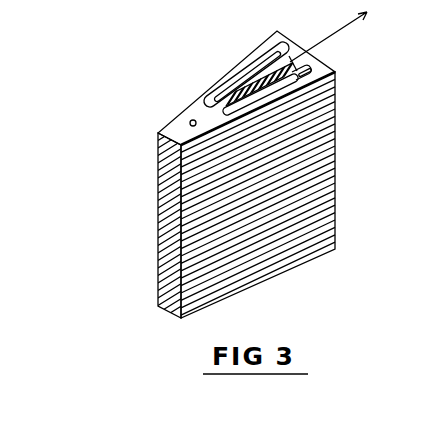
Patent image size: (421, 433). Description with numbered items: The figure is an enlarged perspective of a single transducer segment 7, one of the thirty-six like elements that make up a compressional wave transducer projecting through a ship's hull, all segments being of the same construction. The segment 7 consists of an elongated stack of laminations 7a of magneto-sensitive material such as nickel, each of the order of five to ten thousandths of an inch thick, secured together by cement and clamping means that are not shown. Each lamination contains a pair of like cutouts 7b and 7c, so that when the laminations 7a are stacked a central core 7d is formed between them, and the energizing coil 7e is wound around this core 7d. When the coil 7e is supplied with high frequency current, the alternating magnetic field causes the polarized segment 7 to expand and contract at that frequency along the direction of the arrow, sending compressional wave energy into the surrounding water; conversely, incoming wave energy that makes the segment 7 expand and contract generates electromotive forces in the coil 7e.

The transducer segment 7 is at (249, 166).
The laminations 7a is at (159, 174).
The cutout 7b is at (270, 50).
The cutout 7c is at (314, 66).
The central core 7d is at (305, 56).
The energizing coil 7e is at (250, 68).